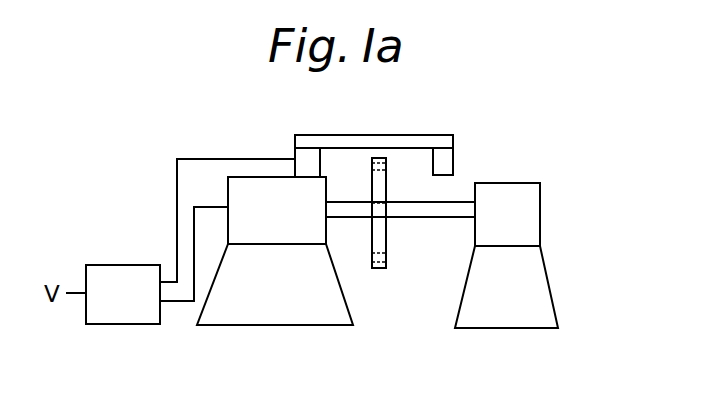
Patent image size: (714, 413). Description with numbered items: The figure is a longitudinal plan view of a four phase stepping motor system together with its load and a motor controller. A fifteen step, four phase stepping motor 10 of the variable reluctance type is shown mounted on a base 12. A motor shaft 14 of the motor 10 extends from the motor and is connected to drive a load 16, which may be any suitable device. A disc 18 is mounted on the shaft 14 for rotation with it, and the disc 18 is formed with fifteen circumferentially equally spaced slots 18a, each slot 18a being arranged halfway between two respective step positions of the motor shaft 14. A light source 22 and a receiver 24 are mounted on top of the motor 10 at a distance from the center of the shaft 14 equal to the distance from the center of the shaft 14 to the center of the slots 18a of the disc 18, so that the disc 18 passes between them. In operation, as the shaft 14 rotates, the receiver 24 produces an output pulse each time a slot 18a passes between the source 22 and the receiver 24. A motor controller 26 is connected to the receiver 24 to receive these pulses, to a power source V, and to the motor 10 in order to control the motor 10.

The stepping motor 10 is at (288, 220).
The base 12 is at (288, 305).
The motor shaft 14 is at (433, 214).
The load 16 is at (513, 186).
The disc 18 is at (386, 238).
The slots 18a is at (386, 163).
The light source 22 is at (453, 160).
The receiver 24 is at (320, 160).
The motor controller 26 is at (121, 273).